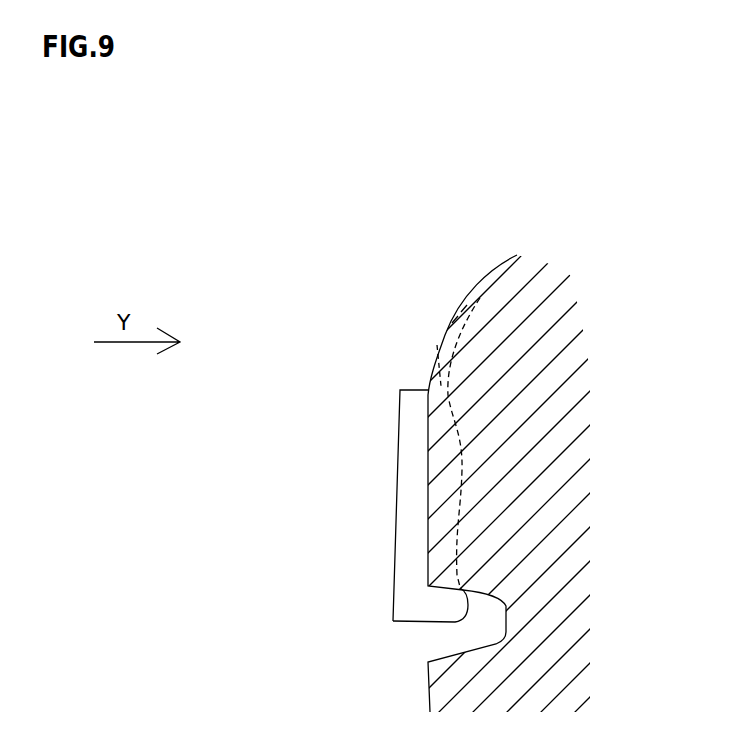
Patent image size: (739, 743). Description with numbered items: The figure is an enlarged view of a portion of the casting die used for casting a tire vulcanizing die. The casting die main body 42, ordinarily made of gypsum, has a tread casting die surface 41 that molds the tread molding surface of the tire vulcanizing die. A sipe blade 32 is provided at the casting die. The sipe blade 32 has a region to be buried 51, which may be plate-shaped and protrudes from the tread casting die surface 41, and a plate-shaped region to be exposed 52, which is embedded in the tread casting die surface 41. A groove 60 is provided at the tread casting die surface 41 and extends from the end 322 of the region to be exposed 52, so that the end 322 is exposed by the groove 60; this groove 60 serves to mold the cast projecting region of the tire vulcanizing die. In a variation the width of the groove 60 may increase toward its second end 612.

The sipe blade 32 is at (360, 506).
The tread casting die surface 41 is at (480, 284).
The casting die main body 42 is at (565, 328).
The region to be buried 51 is at (410, 427).
The region to be exposed 52 is at (440, 492).
The groove 60 is at (432, 343).
The second end 612 is at (450, 310).
The end of region to be exposed 322 is at (430, 368).